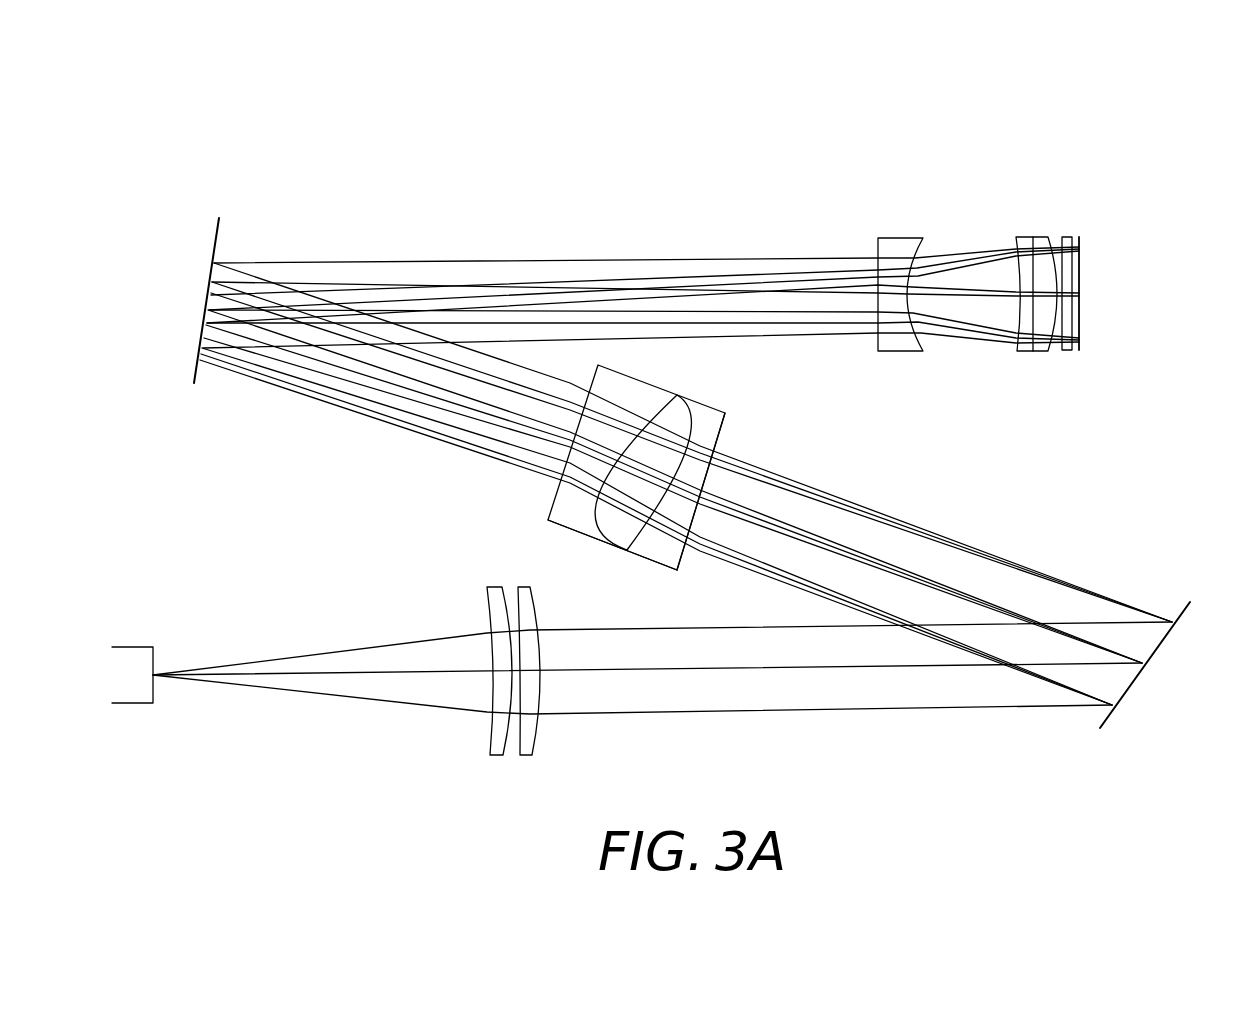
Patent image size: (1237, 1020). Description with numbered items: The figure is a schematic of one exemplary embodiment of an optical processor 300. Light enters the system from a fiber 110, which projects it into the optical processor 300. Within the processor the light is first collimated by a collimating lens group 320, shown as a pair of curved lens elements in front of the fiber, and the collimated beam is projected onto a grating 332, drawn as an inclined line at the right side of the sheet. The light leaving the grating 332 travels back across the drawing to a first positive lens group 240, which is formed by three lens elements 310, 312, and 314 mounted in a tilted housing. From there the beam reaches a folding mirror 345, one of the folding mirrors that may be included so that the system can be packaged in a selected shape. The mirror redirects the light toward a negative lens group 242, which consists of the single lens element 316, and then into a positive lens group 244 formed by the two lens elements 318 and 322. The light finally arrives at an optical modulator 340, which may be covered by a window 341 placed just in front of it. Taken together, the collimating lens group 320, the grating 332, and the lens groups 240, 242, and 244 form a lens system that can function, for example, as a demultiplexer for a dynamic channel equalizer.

The optical processor 300 is at (1113, 119).
The fiber 110 is at (133, 647).
The collimating lens group 320 is at (545, 760).
The grating 332 is at (1127, 693).
The lens element 310 is at (598, 365).
The lens element 312 is at (663, 395).
The lens element 314 is at (725, 413).
The first positive lens group 240 is at (605, 565).
The folding mirror 345 is at (216, 224).
The lens element 316 is at (908, 237).
The negative lens group 242 is at (883, 294).
The lens element 318 is at (1022, 237).
The lens element 322 is at (1040, 237).
The positive lens group 244 is at (1004, 275).
The window 341 is at (1063, 237).
The optical modulator 340 is at (1080, 340).